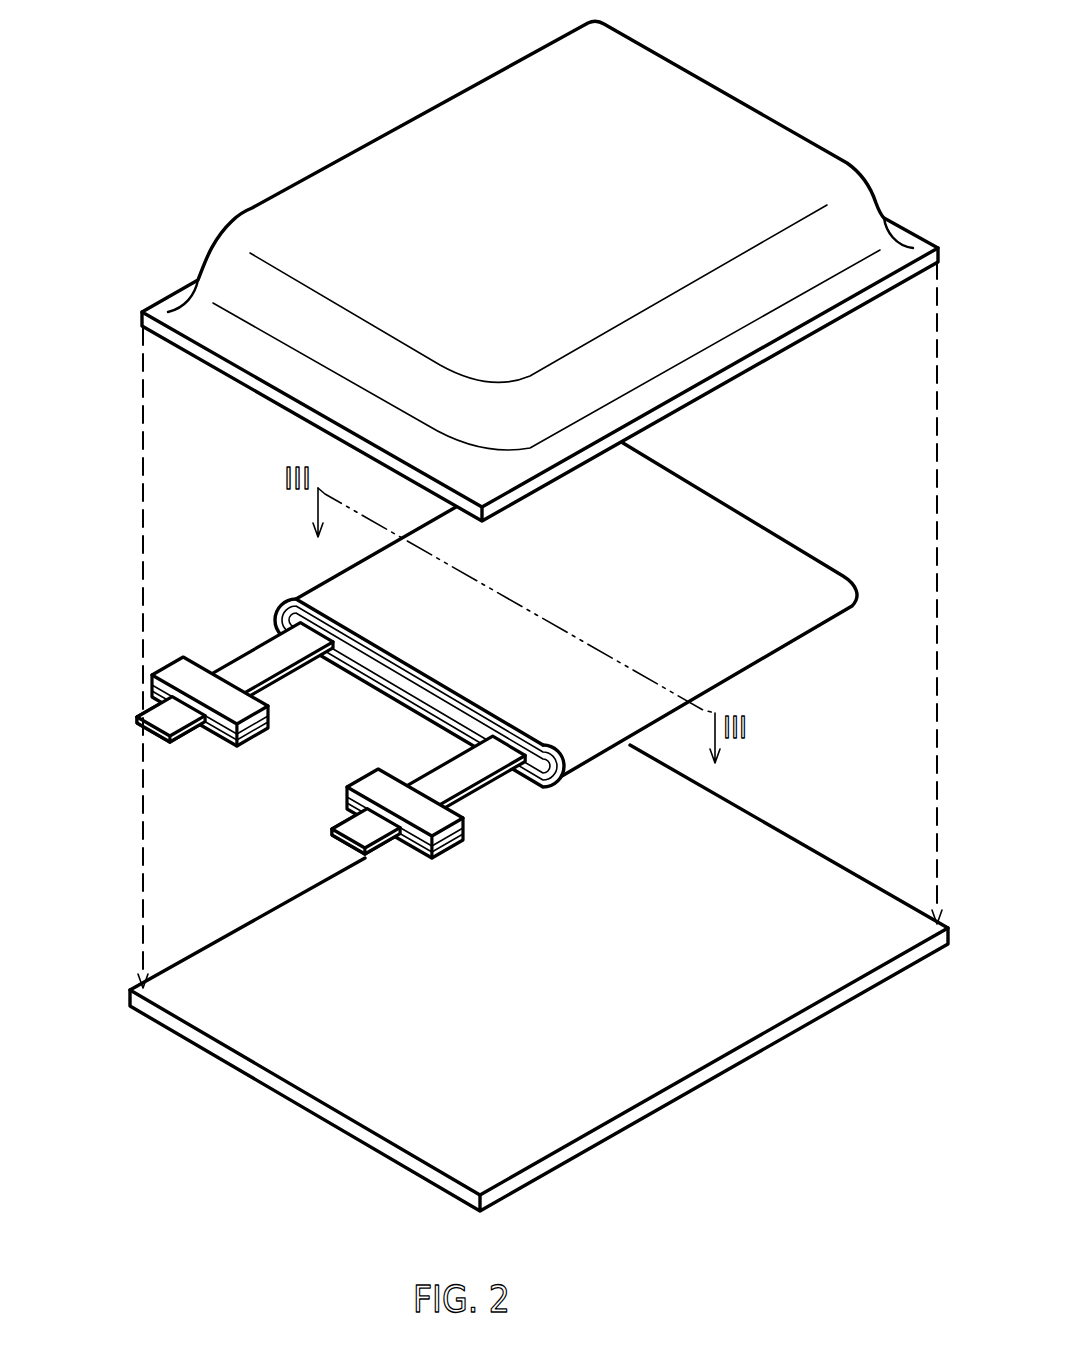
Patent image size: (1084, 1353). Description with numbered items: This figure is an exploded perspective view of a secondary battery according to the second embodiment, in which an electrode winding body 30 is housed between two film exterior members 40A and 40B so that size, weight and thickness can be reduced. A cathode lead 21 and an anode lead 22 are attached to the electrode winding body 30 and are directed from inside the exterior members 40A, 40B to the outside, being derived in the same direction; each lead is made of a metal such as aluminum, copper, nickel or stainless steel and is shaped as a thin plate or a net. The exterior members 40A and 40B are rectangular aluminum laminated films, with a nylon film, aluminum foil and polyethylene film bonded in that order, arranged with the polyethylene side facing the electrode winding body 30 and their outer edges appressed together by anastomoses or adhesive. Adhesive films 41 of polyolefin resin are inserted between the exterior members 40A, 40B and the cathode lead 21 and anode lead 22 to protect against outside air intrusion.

The cathode lead 21 is at (155, 718).
The anode lead 22 is at (347, 828).
The electrode winding body 30 is at (660, 506).
The exterior member 40A is at (718, 113).
The exterior member 40B is at (790, 860).
The adhesive film 41 is at (378, 782).